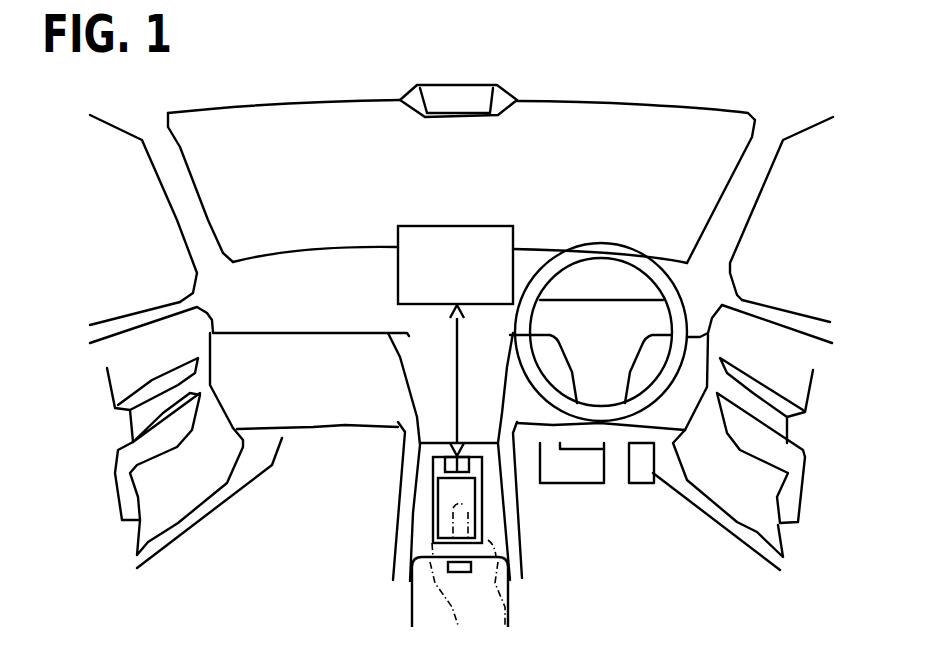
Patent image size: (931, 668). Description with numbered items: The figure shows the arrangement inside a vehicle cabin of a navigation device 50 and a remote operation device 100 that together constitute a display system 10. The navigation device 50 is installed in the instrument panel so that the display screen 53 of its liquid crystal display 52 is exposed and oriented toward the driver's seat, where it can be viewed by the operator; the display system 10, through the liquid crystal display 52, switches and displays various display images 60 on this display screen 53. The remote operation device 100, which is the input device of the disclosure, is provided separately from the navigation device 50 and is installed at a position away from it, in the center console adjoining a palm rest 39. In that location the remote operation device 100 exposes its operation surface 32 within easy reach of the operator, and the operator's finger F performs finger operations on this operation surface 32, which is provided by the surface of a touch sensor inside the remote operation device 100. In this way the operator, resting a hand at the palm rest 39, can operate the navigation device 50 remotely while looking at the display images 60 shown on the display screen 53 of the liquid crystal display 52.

The display system 10 is at (325, 461).
The operation surface 32 is at (447, 499).
The palm rest 39 is at (412, 573).
The navigation device 50 is at (398, 280).
The liquid crystal display 52 is at (438, 235).
The display screen 53 is at (418, 227).
The display image 60 is at (422, 237).
The remote operation device 100 is at (405, 488).
The operator's finger F is at (457, 513).